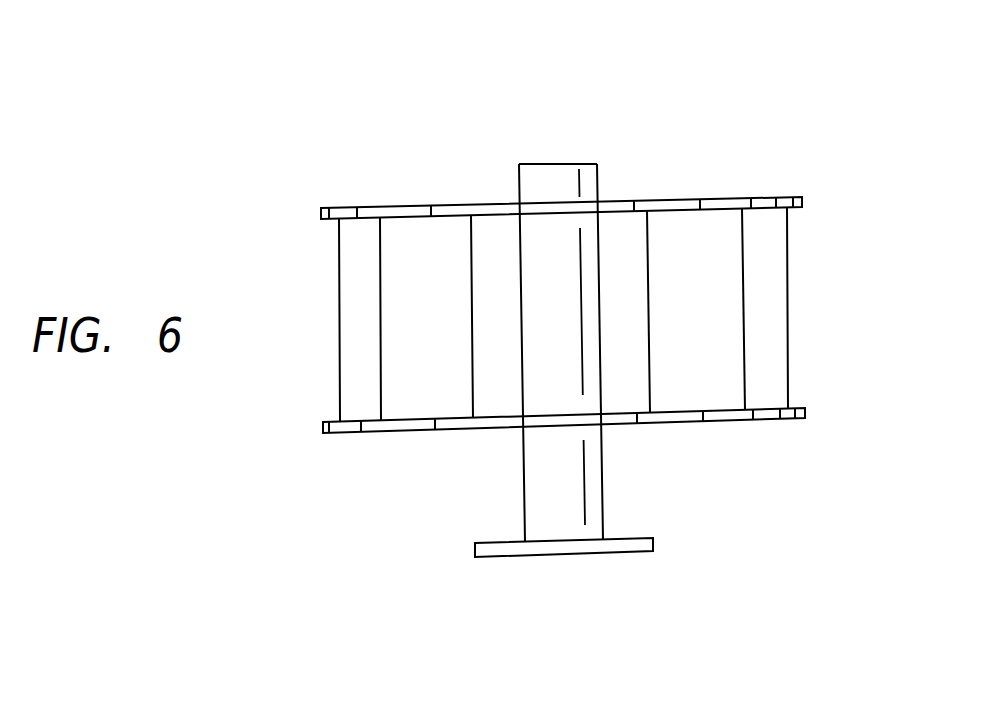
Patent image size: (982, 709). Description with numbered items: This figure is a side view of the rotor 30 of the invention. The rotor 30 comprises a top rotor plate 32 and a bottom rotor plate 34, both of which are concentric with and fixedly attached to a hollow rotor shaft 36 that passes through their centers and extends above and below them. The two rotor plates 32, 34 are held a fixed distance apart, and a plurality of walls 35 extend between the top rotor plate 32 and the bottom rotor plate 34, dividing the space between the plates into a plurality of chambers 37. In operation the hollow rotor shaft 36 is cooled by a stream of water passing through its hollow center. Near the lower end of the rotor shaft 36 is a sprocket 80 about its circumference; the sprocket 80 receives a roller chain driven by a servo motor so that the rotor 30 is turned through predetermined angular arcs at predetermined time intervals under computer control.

The rotor 30 is at (538, 122).
The top rotor plate 32 is at (674, 200).
The bottom rotor plate 34 is at (410, 433).
The walls 35 is at (380, 338).
The hollow rotor shaft 36 is at (580, 163).
The chambers 37 is at (440, 340).
The sprocket 80 is at (626, 551).